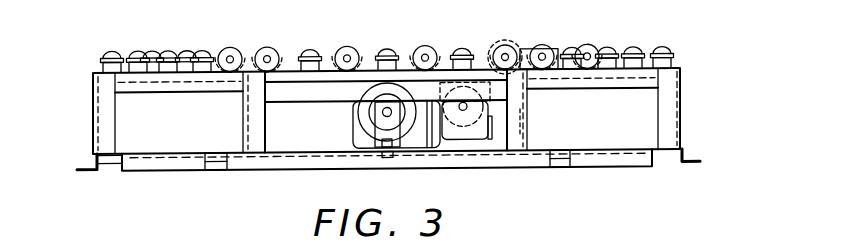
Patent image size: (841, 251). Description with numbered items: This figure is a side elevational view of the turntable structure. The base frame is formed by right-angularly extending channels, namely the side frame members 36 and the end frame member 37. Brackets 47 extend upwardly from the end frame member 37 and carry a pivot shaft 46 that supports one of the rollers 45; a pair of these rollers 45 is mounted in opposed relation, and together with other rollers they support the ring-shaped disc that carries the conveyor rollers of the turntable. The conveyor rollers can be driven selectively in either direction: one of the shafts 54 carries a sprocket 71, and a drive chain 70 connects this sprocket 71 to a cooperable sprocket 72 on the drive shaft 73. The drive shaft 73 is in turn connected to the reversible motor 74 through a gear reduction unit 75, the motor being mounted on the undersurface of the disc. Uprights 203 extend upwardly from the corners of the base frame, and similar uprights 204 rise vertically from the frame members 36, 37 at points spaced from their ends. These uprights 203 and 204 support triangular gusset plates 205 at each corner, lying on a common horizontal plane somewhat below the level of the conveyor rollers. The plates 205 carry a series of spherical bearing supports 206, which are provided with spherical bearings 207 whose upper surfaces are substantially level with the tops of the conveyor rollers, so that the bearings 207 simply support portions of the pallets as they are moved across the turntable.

The side frame member 36 is at (104, 163).
The end frame member 37 is at (193, 163).
The roller 45 is at (360, 110).
The pivot shaft 46 is at (384, 114).
The bracket 47 is at (383, 130).
The shaft 54 is at (512, 58).
The drive chain 70 is at (496, 98).
The sprocket 71 is at (505, 46).
The sprocket 72 is at (519, 124).
The drive shaft 73 is at (463, 112).
The motor 74 is at (419, 140).
The gear reduction unit 75 is at (480, 138).
The upright 203 is at (100, 123).
The upright 204 is at (254, 135).
The triangular gusset plate 205 is at (100, 70).
The spherical bearing support 206 is at (205, 66).
The spherical bearing 207 is at (200, 48).